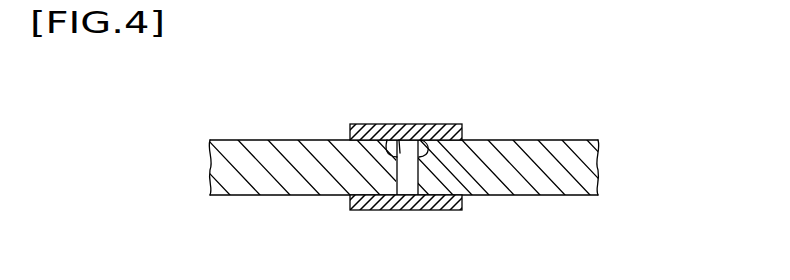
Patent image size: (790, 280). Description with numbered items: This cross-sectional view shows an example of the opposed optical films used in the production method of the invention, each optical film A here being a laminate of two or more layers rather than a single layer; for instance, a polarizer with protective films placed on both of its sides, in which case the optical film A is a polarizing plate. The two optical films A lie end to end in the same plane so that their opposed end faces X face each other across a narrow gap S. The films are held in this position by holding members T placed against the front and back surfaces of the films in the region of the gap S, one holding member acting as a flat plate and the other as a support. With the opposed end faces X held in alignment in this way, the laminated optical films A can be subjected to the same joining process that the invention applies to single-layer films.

The optical film A is at (230, 188).
The gap S is at (408, 190).
The holding member T is at (427, 136).
The opposed end face X is at (389, 142).